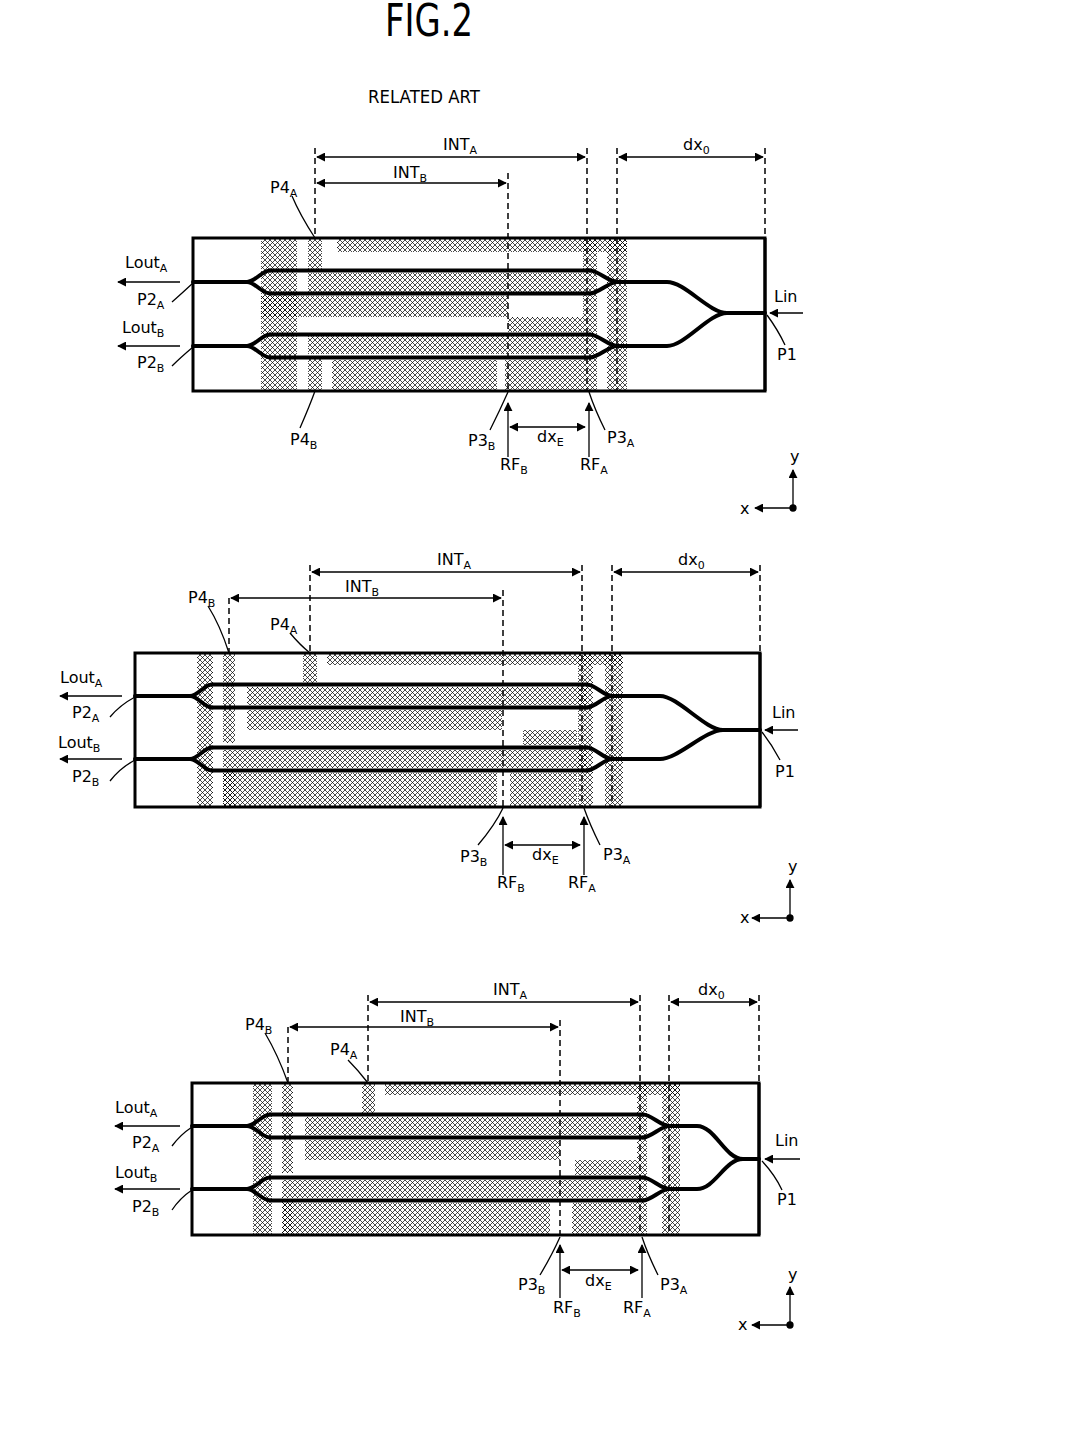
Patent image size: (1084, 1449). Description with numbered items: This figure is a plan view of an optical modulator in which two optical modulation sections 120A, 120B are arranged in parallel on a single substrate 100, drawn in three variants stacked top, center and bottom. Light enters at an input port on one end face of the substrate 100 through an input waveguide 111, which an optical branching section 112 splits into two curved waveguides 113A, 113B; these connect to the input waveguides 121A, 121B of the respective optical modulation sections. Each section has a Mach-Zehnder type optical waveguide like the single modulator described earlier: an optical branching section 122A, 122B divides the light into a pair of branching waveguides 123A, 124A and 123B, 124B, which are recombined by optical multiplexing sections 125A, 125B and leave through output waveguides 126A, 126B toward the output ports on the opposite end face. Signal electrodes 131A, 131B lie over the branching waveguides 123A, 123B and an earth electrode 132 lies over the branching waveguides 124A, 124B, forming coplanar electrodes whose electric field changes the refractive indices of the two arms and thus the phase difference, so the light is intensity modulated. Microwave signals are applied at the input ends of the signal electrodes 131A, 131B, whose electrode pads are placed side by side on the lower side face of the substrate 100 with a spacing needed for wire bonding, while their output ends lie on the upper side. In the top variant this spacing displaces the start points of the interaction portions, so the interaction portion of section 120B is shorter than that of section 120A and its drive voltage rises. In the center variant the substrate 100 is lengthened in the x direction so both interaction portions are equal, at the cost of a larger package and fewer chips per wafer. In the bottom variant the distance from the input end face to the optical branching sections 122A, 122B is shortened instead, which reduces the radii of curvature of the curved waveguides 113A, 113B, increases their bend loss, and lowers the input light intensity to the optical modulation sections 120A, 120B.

The substrate 100 is at (758, 393).
The input waveguide 111 is at (763, 278).
The optical branching section 112 is at (735, 292).
The curved waveguide 113A is at (700, 292).
The curved waveguide 113B is at (700, 352).
The optical modulation section 120A is at (257, 186).
The optical modulation section 120B is at (272, 452).
The input waveguide 121A is at (642, 278).
The input waveguide 121B is at (648, 352).
The optical branching section 122A is at (620, 282).
The optical branching section 122B is at (622, 360).
The arm waveguide A 123A is at (434, 268).
The arm waveguide B 123B is at (362, 337).
The arm waveguide A 124A is at (393, 288).
The arm waveguide B 124B is at (335, 358).
The output Y-branch A 125A is at (247, 277).
The output Y-branch B 125B is at (246, 352).
The output waveguide A 126A is at (217, 277).
The output waveguide B 126B is at (217, 352).
The signal electrode 131A is at (540, 263).
The signal electrode 131B is at (418, 337).
The earth electrode 132 is at (280, 391).